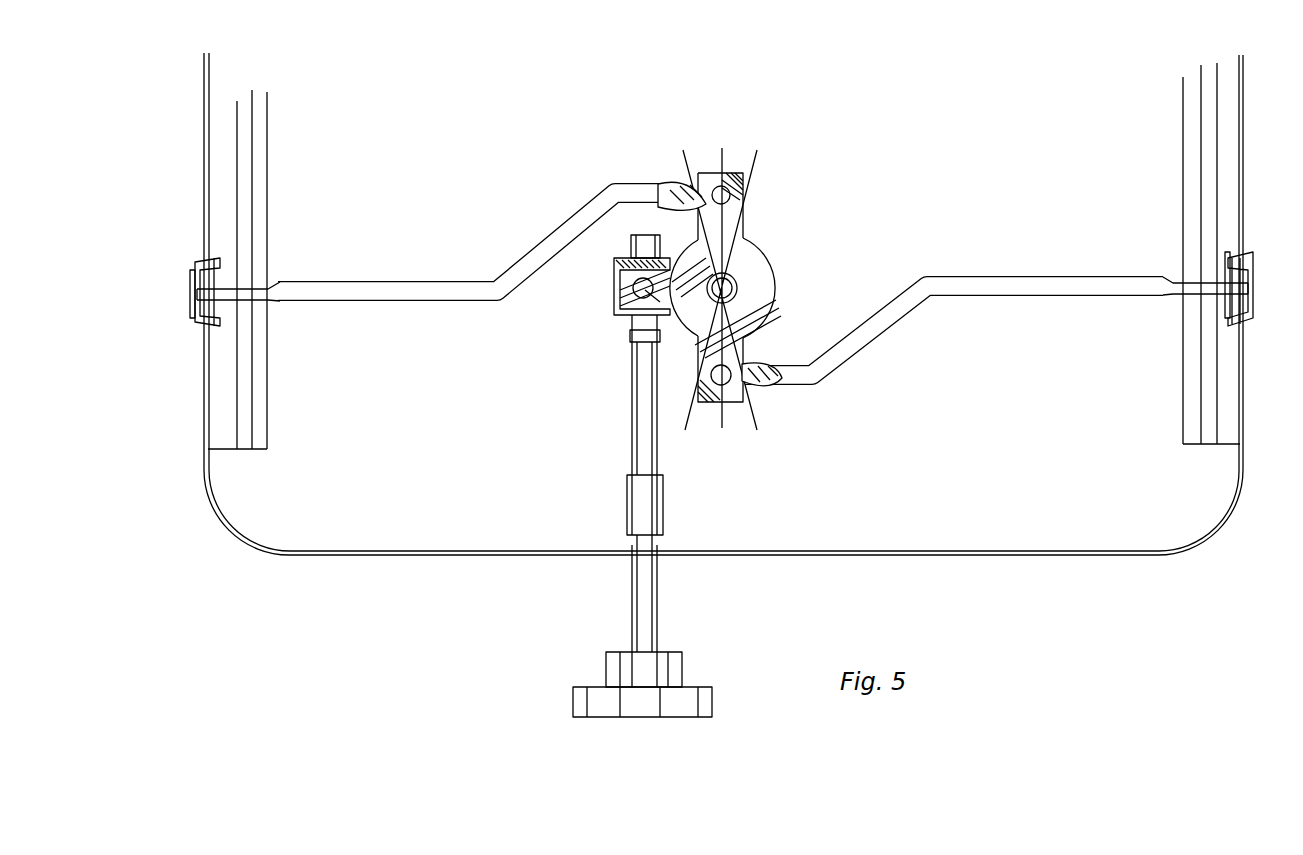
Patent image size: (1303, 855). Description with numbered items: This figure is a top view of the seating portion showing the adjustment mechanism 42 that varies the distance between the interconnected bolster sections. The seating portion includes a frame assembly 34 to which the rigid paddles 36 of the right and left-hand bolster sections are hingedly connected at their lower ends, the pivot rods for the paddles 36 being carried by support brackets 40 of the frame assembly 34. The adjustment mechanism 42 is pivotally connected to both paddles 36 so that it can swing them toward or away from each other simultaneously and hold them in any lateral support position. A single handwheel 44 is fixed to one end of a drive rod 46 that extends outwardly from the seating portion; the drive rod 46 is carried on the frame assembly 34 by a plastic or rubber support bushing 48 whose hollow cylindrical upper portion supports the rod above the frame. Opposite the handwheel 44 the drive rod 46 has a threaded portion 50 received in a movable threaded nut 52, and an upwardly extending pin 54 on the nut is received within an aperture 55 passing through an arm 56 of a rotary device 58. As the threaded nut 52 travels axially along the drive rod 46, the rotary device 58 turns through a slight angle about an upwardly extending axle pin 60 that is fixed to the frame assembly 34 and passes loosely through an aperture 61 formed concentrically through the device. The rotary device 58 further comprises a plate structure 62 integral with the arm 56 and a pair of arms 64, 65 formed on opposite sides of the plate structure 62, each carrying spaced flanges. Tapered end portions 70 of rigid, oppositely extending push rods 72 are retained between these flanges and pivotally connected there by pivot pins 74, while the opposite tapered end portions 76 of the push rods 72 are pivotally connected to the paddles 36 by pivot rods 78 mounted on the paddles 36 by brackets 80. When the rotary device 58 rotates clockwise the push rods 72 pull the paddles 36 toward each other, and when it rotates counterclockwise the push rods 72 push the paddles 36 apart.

The frame assembly 34 is at (1007, 562).
The paddles 36 is at (203, 240).
The support brackets 40 is at (258, 450).
The adjustment mechanism 42 is at (352, 612).
The handwheel 44 is at (573, 712).
The drive rod 46 is at (630, 568).
The support bushing 48 is at (628, 502).
The threaded portion 50 is at (627, 325).
The threaded nut 52 is at (614, 302).
The pin 54 is at (618, 268).
The aperture 55 is at (650, 296).
The arm 56 is at (618, 283).
The rotary device 58 is at (785, 268).
The axle pin 60 is at (762, 305).
The aperture 61 is at (703, 263).
The plate structure 62 is at (763, 246).
The arm 64 is at (748, 224).
The arm 65 is at (752, 353).
The tapered end portions 70 is at (676, 183).
The push rods 72 is at (552, 232).
The pivot pins 74 is at (725, 190).
The tapered end portions 76 is at (257, 298).
The pivot rods 78 is at (218, 280).
The brackets 80 is at (187, 312).